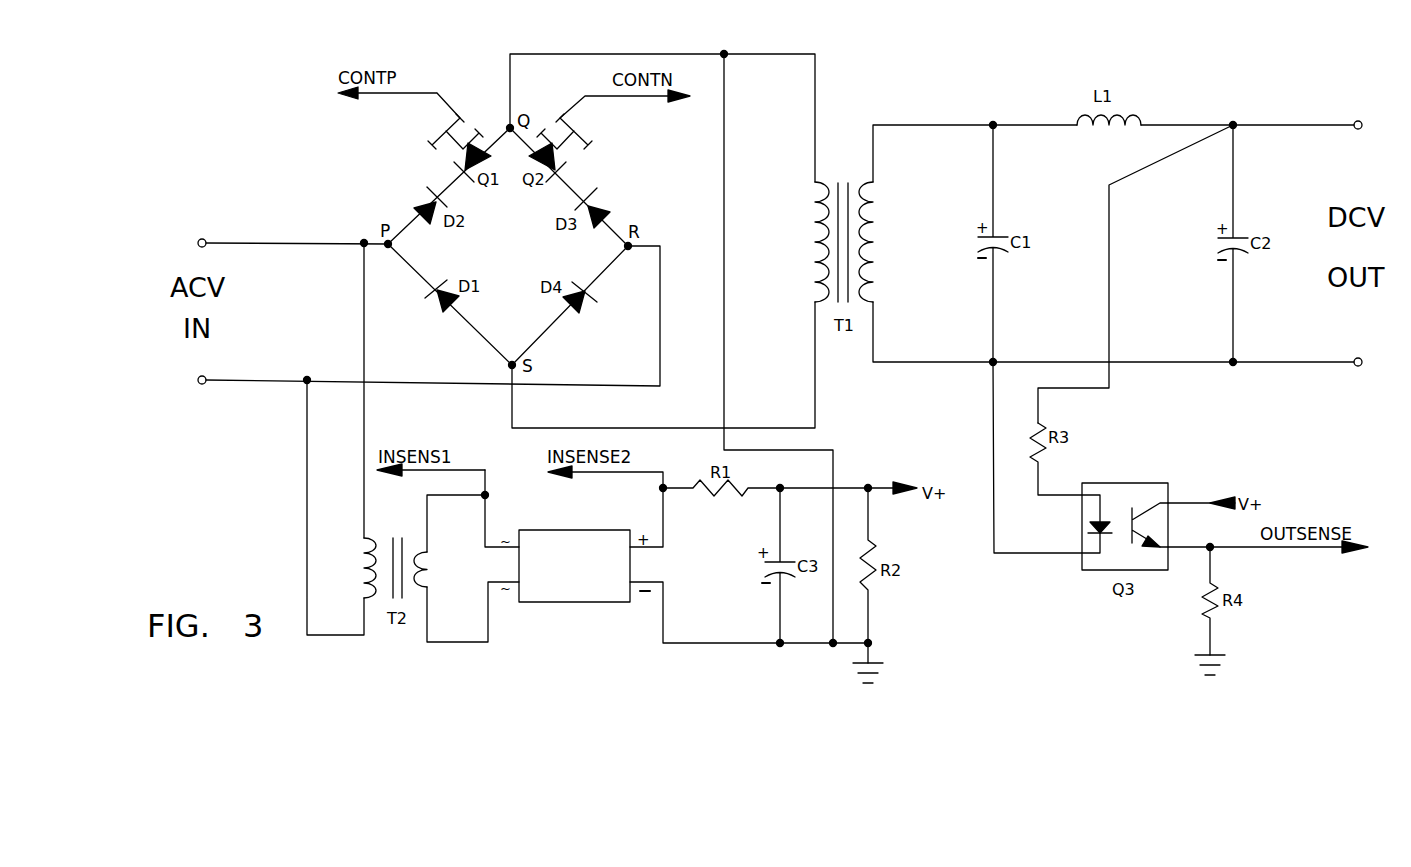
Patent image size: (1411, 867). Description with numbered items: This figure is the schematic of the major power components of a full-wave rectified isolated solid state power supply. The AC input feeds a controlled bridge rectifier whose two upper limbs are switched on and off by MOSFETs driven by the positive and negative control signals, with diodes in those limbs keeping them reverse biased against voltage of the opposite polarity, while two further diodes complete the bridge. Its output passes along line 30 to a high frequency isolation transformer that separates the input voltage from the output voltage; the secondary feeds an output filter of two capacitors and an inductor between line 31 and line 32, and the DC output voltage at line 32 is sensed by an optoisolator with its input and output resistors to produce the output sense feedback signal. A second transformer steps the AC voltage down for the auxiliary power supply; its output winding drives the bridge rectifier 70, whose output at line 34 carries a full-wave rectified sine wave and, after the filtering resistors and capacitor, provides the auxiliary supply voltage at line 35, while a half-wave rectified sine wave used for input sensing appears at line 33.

The bridge rectifier 70 is at (555, 530).
The line L30 30 is at (729, 122).
The line L31 31 is at (918, 125).
The output line of the SSPS (L32) 32 is at (1253, 125).
The signal line INSENSE1 (L33) 33 is at (487, 515).
The signal line INSENSE2 (L34) 34 is at (667, 530).
The line L35 35 is at (788, 472).